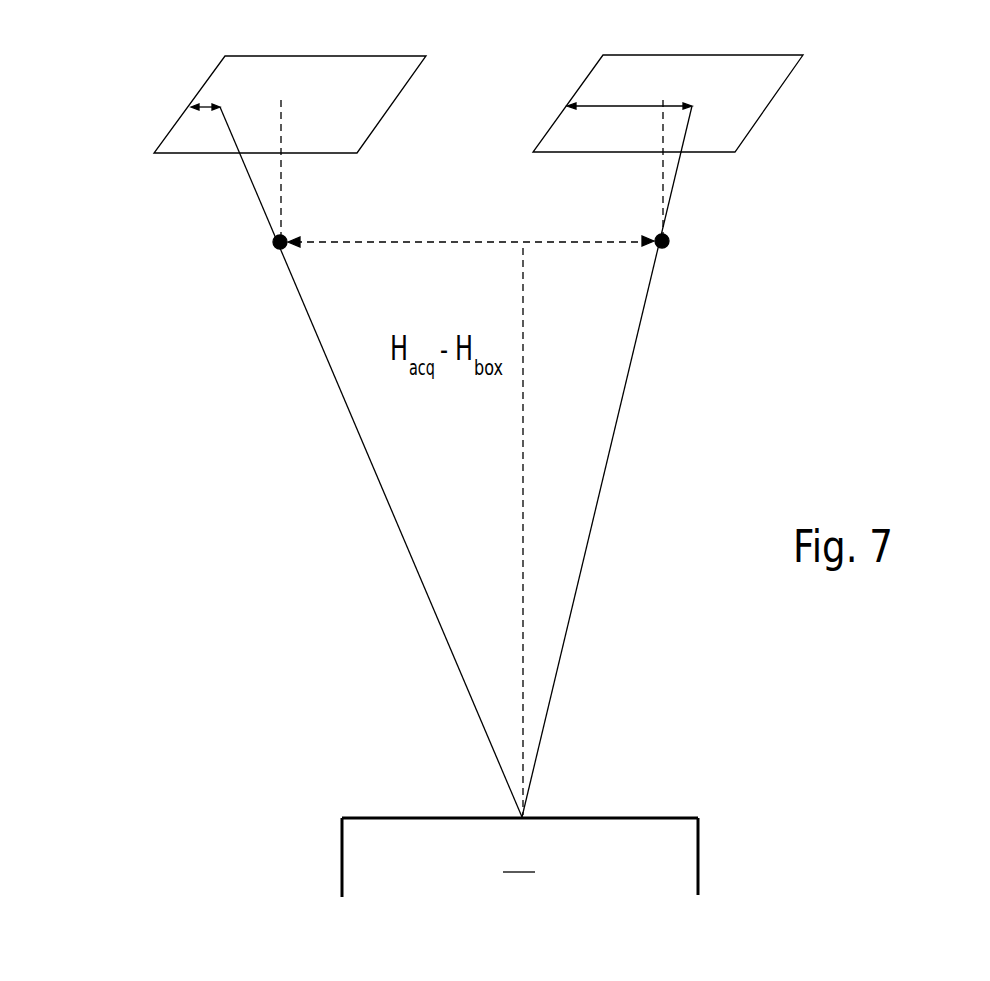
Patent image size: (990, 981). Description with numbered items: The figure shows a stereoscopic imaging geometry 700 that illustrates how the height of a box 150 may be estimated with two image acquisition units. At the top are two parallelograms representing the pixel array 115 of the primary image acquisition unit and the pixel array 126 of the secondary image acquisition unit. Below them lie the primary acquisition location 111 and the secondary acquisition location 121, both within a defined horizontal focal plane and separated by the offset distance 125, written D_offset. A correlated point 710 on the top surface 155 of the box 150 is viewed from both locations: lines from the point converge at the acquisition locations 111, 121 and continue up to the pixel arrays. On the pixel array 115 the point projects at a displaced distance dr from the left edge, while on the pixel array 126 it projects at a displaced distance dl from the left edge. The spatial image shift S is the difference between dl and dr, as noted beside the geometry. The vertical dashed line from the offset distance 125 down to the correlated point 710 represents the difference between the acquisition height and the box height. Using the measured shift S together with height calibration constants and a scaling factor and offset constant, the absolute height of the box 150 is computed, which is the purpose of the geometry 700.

The stereoscopic imaging geometry 700 is at (896, 113).
The pixel array of the secondary image acquisition unit 126 is at (265, 55).
The pixel array of the primary image acquisition unit 115 is at (760, 55).
The secondary acquisition location 121 is at (275, 243).
The primary acquisition location 111 is at (668, 243).
The offset distance 125 is at (393, 241).
The correlated point 710 is at (524, 816).
The box 150 is at (555, 828).
The top surface of the box 155 is at (655, 817).